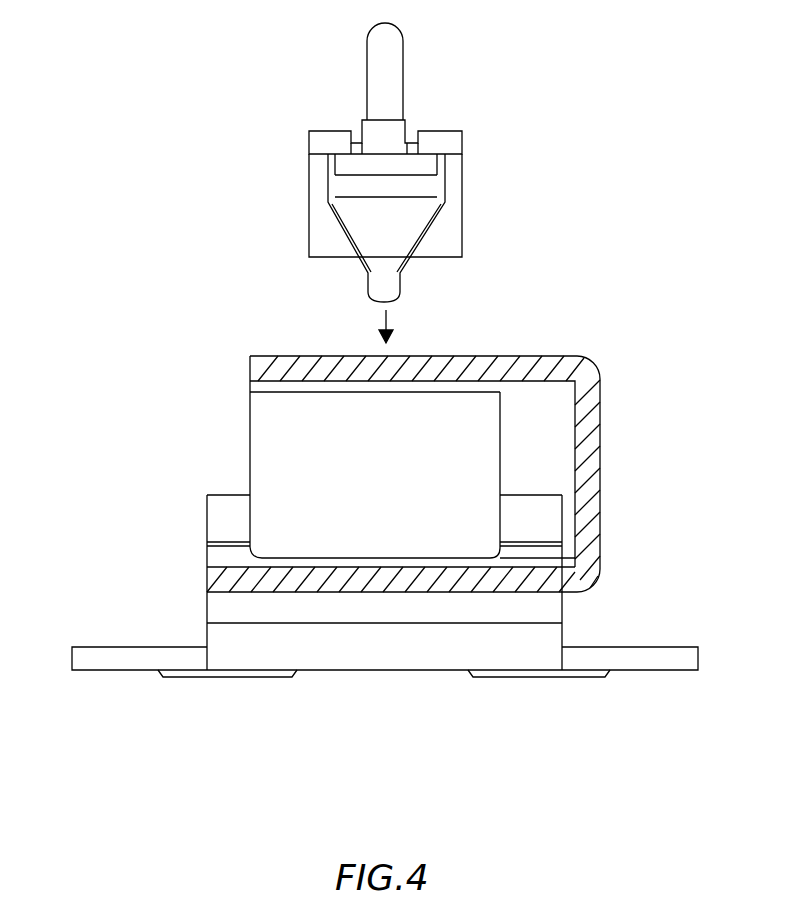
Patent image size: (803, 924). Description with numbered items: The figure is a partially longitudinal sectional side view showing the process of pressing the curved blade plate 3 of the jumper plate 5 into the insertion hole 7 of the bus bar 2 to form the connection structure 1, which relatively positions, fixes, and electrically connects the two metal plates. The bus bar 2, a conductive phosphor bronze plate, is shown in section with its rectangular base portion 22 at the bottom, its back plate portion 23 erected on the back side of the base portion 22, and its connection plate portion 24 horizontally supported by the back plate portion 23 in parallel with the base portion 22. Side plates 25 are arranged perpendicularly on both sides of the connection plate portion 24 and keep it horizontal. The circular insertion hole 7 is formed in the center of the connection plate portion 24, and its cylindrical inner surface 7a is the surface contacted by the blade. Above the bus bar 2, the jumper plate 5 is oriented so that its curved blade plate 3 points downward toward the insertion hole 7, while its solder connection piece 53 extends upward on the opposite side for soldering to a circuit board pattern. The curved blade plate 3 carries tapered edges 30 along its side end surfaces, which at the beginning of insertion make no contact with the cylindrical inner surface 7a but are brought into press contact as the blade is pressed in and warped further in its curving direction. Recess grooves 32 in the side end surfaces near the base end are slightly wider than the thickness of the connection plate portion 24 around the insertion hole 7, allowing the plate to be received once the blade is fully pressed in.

The connection structure 1 is at (619, 195).
The bus bar 2 is at (385, 530).
The curved blade plate 3 is at (393, 162).
The jumper plate 5 is at (399, 132).
The insertion hole 7 is at (434, 366).
The cylindrical inner surface 7a is at (320, 372).
The base portion 22 is at (417, 590).
The back plate portion 23 is at (585, 452).
The connection plate portion 24 is at (548, 372).
The side plates 25 is at (268, 443).
The edges 30 is at (458, 228).
The recess grooves 32 is at (457, 172).
The solder connection piece 53 is at (378, 43).